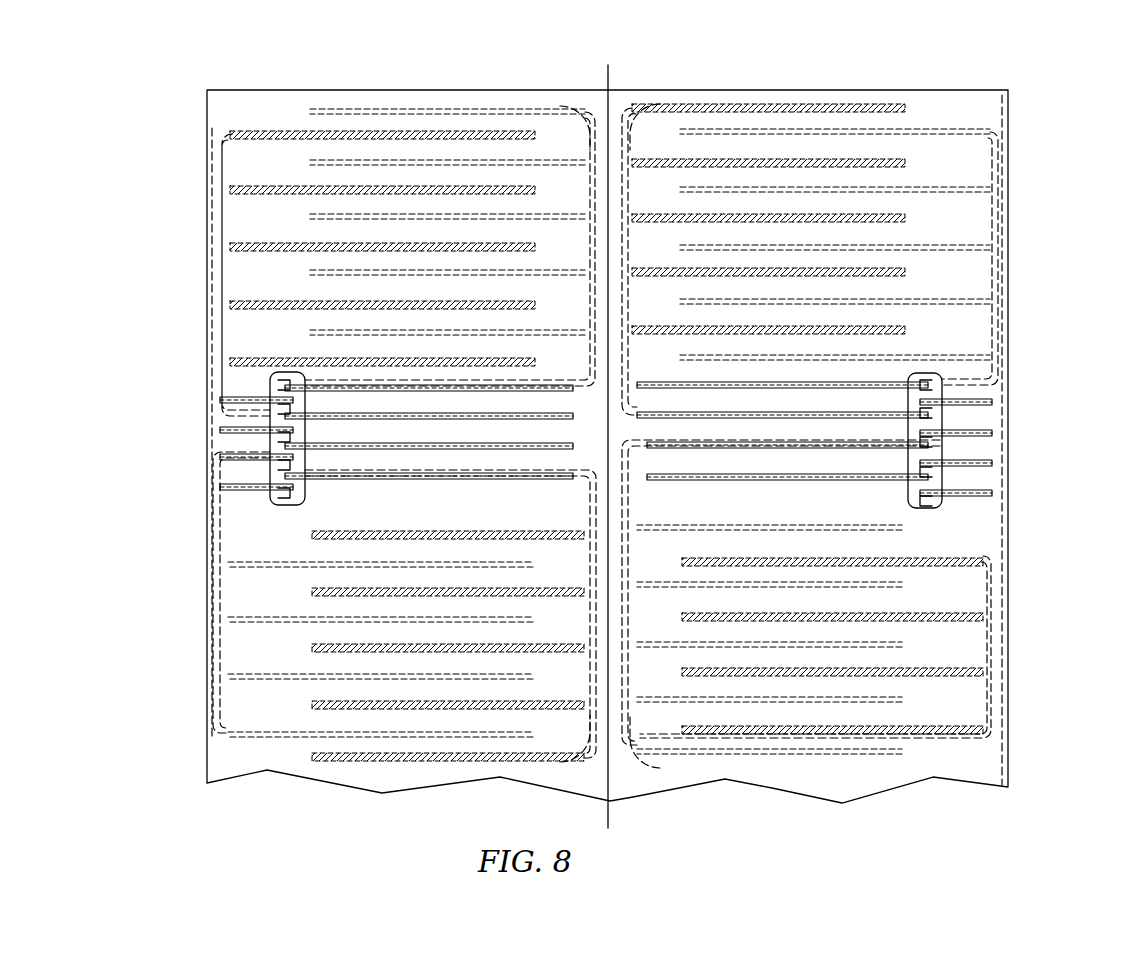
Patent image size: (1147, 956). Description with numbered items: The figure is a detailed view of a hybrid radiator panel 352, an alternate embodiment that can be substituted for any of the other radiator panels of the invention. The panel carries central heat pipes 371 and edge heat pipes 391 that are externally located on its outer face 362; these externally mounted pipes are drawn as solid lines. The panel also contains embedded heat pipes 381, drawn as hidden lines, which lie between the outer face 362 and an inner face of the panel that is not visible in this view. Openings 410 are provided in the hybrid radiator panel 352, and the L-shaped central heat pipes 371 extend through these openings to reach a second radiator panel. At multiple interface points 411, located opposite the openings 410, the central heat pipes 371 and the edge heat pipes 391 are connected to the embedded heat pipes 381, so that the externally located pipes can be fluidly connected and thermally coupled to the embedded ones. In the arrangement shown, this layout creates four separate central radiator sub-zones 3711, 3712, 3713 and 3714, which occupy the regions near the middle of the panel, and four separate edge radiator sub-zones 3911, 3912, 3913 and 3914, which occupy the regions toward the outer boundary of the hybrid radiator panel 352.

The hybrid radiator panel 352 is at (1022, 128).
The outer face 362 is at (255, 527).
The central heat pipes 371 is at (326, 384).
The embedded heat pipes 381 is at (430, 184).
The edge heat pipes 391 is at (224, 433).
The openings 410 is at (274, 386).
The interface points 411 is at (995, 426).
The central radiator sub-zone 3711 is at (592, 128).
The central radiator sub-zone 3712 is at (627, 132).
The central radiator sub-zone 3713 is at (592, 718).
The central radiator sub-zone 3714 is at (627, 727).
The edge radiator sub-zone 3911 is at (350, 232).
The edge radiator sub-zone 3912 is at (872, 232).
The edge radiator sub-zone 3913 is at (350, 632).
The edge radiator sub-zone 3914 is at (882, 628).